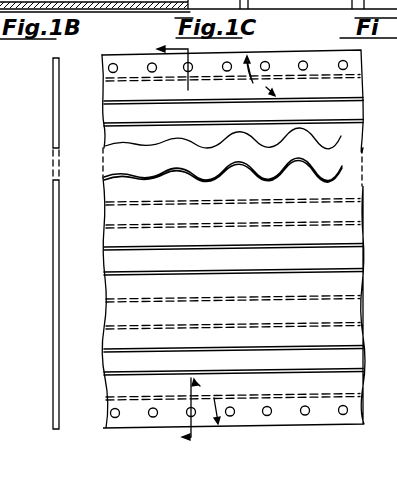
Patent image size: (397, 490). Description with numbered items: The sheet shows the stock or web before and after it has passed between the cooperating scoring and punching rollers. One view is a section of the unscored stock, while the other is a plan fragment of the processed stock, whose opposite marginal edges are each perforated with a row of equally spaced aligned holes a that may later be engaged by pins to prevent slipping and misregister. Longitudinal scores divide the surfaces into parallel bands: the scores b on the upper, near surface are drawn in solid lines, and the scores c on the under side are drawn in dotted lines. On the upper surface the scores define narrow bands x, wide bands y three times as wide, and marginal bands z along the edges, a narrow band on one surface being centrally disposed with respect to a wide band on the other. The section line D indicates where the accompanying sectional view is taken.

The holes a is at (114, 63).
The scores on upper surface b is at (107, 122).
The scores on under side c is at (104, 80).
The section line D— D is at (164, 243).
The narrow bands of upper surface x is at (230, 239).
The wide bands of upper surface y is at (223, 227).
The marginal bands of upper surface z is at (233, 240).